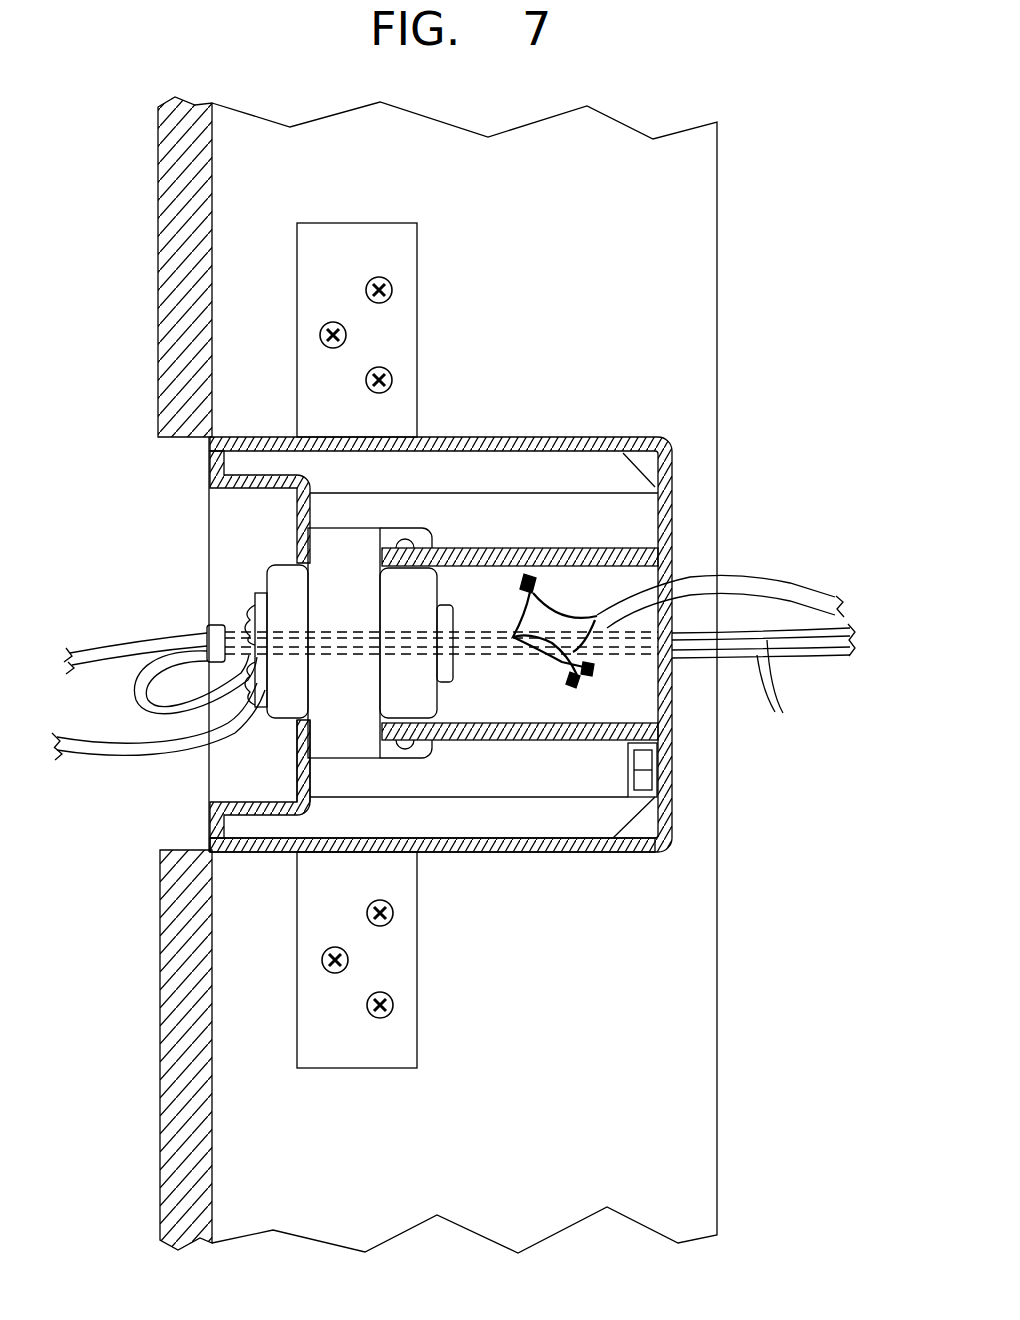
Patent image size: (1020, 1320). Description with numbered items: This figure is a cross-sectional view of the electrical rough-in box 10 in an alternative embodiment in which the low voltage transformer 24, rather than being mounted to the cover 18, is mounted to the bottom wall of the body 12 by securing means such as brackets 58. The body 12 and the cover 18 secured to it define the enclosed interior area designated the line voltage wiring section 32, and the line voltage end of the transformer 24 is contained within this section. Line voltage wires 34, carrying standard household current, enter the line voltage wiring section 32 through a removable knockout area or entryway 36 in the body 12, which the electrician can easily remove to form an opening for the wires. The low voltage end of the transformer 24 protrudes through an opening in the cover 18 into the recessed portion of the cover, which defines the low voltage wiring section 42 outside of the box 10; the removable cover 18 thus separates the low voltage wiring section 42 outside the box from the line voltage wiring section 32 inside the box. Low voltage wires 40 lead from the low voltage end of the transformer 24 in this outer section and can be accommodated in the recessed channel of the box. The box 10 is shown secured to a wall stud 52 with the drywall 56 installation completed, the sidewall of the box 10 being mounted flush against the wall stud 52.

The box 10 is at (541, 434).
The body 12 is at (542, 869).
The cover 18 is at (286, 759).
The low voltage transformer 24 is at (368, 606).
The line voltage wiring section 32 is at (487, 762).
The line voltage wires 34 is at (780, 588).
The knockout areas or entryway 36 is at (640, 468).
The low voltage wires 40 is at (93, 645).
The low voltage wiring section 42 is at (247, 783).
The wall stud 52 is at (705, 335).
The drywall 56 is at (160, 315).
The brackets 58 is at (467, 568).